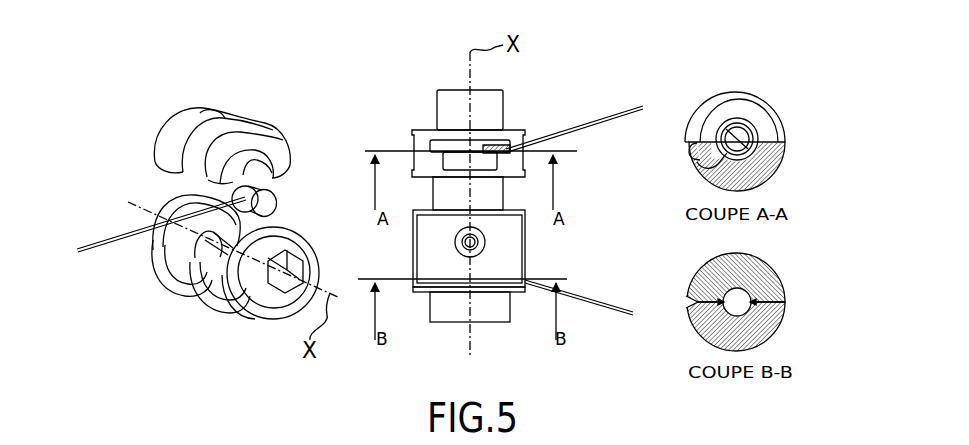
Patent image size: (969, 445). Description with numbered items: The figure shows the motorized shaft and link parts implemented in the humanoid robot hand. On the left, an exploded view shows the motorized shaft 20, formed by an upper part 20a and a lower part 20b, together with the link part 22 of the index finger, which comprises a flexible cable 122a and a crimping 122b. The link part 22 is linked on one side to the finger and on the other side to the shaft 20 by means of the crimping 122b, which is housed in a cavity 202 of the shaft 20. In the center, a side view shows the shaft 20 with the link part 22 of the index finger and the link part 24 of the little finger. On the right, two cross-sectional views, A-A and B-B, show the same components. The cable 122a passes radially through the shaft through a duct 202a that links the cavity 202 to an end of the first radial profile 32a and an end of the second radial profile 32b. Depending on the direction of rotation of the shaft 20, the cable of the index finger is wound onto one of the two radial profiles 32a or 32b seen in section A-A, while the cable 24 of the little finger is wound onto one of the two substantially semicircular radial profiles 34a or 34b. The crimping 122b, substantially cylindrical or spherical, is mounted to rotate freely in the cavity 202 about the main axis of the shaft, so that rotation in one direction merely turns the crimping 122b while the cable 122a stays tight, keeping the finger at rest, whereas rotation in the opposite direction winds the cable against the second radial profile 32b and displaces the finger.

The motorized shaft 20 is at (135, 113).
The upper part 20a is at (197, 108).
The lower part 20b is at (257, 320).
The link part 22 is at (117, 221).
The flexible cable 122a is at (108, 242).
The crimping 122b is at (277, 203).
The link part 24 is at (606, 316).
The first radial profile 32a is at (762, 115).
The second radial profile 32b is at (775, 175).
The cavity 202 is at (700, 170).
The duct 202a is at (706, 157).
The radial profile 34a is at (762, 263).
The radial profile 34b is at (770, 333).